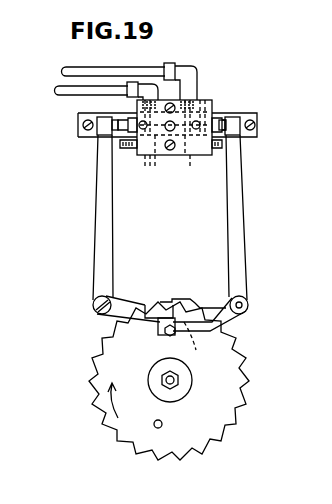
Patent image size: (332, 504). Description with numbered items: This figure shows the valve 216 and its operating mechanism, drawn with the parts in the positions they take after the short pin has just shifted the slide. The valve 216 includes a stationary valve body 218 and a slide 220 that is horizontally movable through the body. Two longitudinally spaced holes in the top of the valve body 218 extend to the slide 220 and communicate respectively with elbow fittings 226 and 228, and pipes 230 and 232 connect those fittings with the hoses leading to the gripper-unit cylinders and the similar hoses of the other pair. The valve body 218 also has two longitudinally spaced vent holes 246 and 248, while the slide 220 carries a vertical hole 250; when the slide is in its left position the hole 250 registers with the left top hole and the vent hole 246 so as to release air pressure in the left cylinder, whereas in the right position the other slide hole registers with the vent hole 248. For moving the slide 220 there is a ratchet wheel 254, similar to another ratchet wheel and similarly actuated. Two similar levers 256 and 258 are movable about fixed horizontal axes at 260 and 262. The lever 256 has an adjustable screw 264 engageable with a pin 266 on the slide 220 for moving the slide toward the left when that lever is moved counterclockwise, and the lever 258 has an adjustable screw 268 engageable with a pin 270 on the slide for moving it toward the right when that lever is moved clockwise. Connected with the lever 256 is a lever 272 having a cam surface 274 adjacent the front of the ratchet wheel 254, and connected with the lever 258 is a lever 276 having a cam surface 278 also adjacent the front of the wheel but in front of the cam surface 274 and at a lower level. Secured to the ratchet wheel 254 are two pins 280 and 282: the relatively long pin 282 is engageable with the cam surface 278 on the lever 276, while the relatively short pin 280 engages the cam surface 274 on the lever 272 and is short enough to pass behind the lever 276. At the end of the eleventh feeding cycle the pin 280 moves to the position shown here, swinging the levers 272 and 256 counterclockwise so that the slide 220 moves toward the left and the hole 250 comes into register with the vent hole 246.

The valve 216 is at (143, 156).
The valve body 218 is at (205, 110).
The slide 220 is at (252, 114).
The elbow fitting 226 is at (148, 90).
The elbow fitting 228 is at (190, 75).
The pipe 230 is at (64, 94).
The pipe 232 is at (66, 70).
The vent hole 246 is at (147, 170).
The vent hole 248 is at (193, 160).
The vertical hole 250 is at (167, 167).
The ratchet wheel 254 is at (240, 384).
The lever 256 is at (110, 231).
The lever 258 is at (232, 208).
The fixed horizontal axis 260 is at (94, 303).
The fixed horizontal axis 262 is at (249, 303).
The adjustable screw 264 is at (93, 137).
The pin 266 is at (84, 131).
The adjustable screw 268 is at (241, 136).
The pin 270 is at (257, 125).
The lever 272 is at (134, 313).
The cam surface 274 is at (160, 331).
The lever 276 is at (206, 318).
The cam surface 278 is at (157, 361).
The pin 280 is at (202, 342).
The pin 282 is at (162, 425).